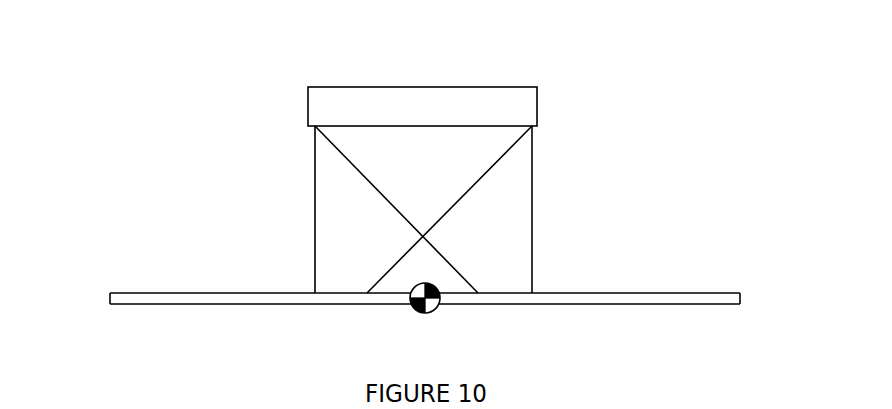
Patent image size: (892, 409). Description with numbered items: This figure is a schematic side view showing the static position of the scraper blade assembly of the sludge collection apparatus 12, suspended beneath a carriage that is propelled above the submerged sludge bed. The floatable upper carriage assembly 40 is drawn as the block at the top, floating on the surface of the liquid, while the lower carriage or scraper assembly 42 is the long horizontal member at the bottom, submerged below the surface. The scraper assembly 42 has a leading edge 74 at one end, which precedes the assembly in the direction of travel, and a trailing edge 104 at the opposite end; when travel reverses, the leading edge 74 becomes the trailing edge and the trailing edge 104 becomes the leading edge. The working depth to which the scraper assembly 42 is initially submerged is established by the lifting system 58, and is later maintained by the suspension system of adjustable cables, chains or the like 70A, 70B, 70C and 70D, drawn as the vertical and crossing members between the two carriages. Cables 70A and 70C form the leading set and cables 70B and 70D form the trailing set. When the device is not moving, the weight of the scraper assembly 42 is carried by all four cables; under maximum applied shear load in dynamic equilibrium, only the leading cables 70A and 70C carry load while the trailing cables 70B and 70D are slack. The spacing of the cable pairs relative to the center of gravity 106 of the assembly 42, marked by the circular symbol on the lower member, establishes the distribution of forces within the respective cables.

The sludge collection apparatus 12 is at (431, 153).
The upper carriage assembly 40 is at (537, 103).
The lifting system 58 is at (553, 209).
The cables 70A is at (315, 222).
The cables 70B is at (393, 264).
The cables 70C is at (400, 200).
The cables 70D is at (533, 258).
The leading edge 74 is at (110, 298).
The lower carriage or scraper assembly 42 is at (630, 302).
The trailing edge 104 is at (740, 297).
The center of gravity 106 is at (440, 308).